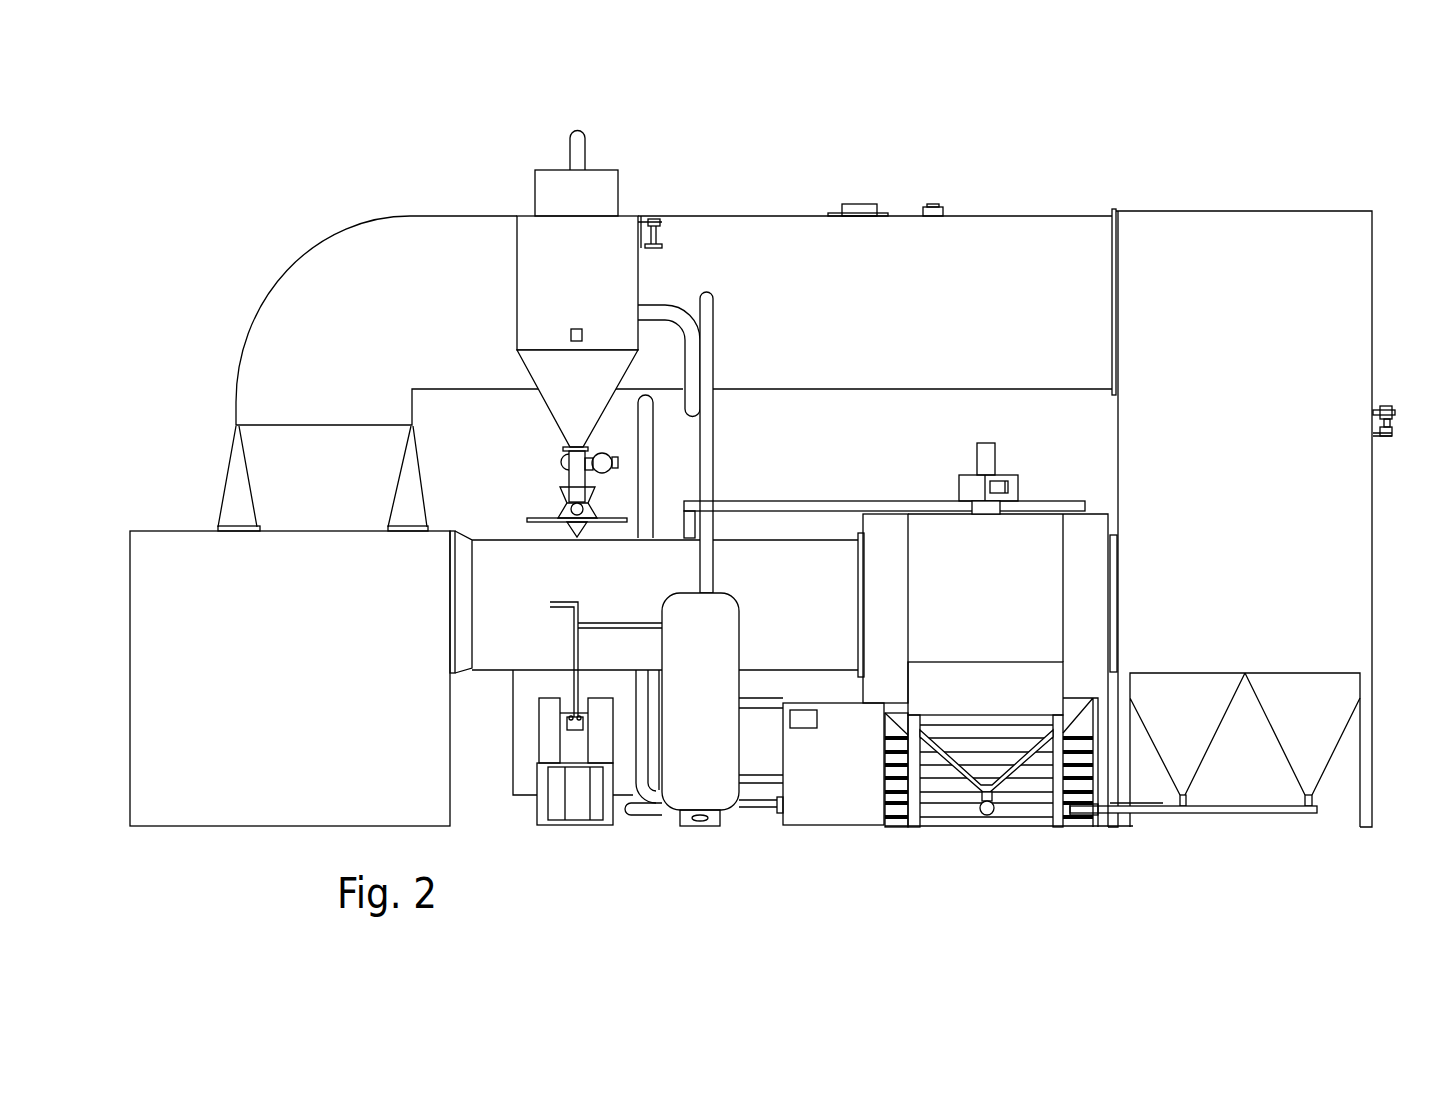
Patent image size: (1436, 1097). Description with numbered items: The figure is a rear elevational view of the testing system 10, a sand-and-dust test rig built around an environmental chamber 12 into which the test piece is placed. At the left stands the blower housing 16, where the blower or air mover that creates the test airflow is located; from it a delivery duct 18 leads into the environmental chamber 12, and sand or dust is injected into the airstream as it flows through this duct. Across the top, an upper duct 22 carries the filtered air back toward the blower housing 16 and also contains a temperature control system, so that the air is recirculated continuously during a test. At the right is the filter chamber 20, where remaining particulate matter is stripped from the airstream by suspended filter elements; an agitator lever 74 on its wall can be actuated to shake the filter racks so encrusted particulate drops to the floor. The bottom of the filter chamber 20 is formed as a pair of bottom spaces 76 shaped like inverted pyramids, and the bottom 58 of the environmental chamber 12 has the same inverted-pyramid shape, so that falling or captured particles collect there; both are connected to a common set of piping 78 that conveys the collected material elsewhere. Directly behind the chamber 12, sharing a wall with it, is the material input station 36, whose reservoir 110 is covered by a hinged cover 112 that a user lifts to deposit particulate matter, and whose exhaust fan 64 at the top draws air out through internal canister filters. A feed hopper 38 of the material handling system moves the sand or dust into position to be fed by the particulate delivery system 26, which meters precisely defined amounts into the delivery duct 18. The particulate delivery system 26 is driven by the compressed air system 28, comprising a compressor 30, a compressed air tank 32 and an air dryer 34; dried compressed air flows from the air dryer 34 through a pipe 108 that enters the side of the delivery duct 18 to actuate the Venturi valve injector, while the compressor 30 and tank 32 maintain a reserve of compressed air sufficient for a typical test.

The testing system 10 is at (293, 152).
The environmental chamber 12 is at (886, 540).
The blower housing 16 is at (148, 670).
The delivery duct 18 is at (494, 652).
The filter chamber 20 is at (1350, 528).
The upper duct 22 is at (1045, 222).
The particulate delivery system 26 is at (558, 479).
The compressed air system 28 is at (535, 850).
The compressor 30 is at (843, 815).
The compressed air tank 32 is at (677, 795).
The air dryer 34 is at (573, 808).
The material input station 36 is at (922, 604).
The feed hopper 38 is at (540, 372).
The bottom of the environmental test chamber 58 is at (1035, 755).
The exhaust fan 64 is at (970, 483).
The agitator lever 74 is at (1381, 408).
The bottom spaces 76 is at (1185, 690).
The piping 78 is at (1267, 814).
The pipe 108 is at (563, 600).
The reservoir 110 is at (972, 762).
The hinged cover 112 is at (975, 676).